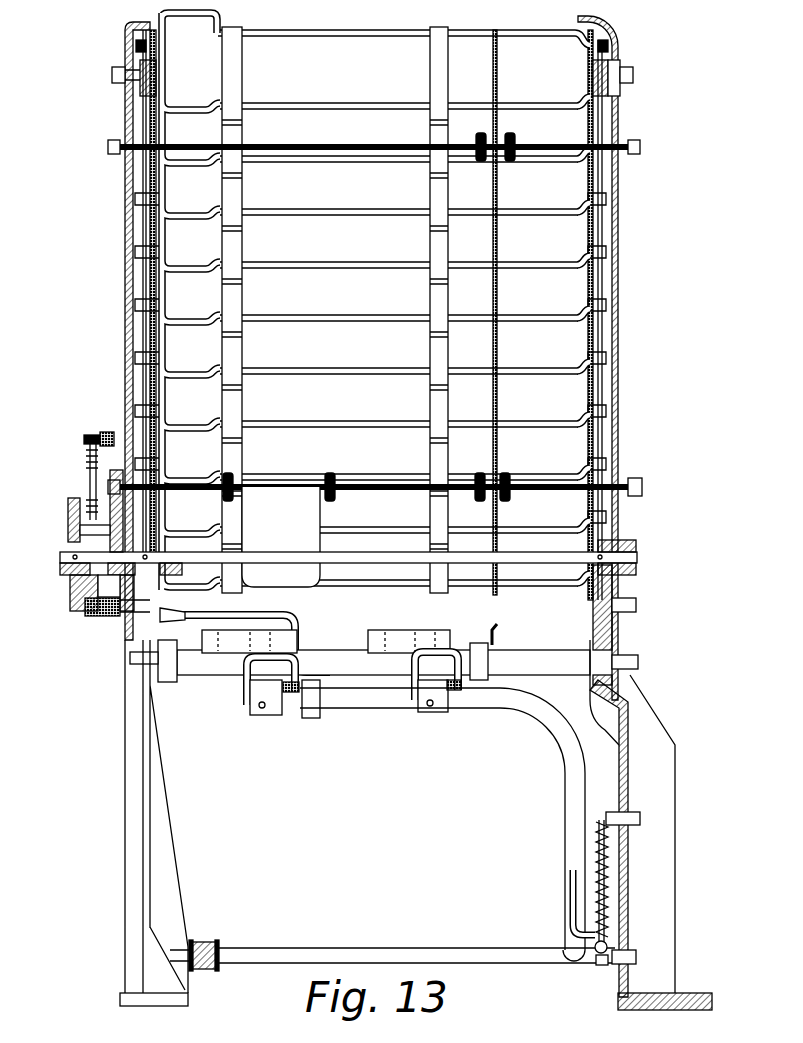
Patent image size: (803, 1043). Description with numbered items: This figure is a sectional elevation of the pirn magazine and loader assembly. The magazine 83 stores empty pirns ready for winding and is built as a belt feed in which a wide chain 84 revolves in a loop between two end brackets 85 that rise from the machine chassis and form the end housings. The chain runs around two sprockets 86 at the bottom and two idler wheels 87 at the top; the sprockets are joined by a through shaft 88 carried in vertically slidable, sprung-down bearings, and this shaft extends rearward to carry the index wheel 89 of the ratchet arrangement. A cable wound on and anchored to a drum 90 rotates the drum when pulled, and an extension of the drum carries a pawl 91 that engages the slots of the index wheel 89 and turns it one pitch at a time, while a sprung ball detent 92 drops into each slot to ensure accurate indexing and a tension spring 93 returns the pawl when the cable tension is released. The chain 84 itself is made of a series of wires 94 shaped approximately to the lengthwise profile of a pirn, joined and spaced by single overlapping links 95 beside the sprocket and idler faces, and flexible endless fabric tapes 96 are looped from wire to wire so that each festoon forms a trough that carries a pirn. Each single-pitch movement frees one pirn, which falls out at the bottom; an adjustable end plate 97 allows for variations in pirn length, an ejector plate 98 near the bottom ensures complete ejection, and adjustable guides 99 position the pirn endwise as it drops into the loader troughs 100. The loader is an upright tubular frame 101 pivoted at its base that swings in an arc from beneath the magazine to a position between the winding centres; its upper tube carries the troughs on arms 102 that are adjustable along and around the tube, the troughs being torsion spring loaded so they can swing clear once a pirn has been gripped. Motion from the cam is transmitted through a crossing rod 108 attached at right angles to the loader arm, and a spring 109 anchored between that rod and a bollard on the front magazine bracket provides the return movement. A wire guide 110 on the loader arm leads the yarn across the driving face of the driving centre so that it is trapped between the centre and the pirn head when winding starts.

The magazine 83 is at (619, 345).
The wide chain 84 is at (136, 318).
The end brackets 85 is at (155, 783).
The sprockets 86 is at (150, 581).
The idler wheels 87 is at (153, 53).
The through shaft 88 is at (378, 640).
The index wheel 89 is at (93, 602).
The drum 90 is at (95, 587).
The pawl 91 is at (90, 530).
The sprung ball detent 92 is at (88, 606).
The tension spring 93 is at (92, 454).
The wires 94 is at (330, 318).
The overlapping links 95 is at (143, 268).
The flexible endless fabric tapes 96 is at (430, 188).
The adjustable end plate 97 is at (498, 292).
The ejector plate 98 is at (299, 531).
The adjustable guides 99 is at (493, 630).
The loader troughs 100 is at (373, 640).
The tubular frame 101 is at (566, 747).
The arms 102 is at (430, 705).
The rod 108 is at (597, 940).
The spring 109 is at (597, 898).
The wire guide 110 is at (263, 613).